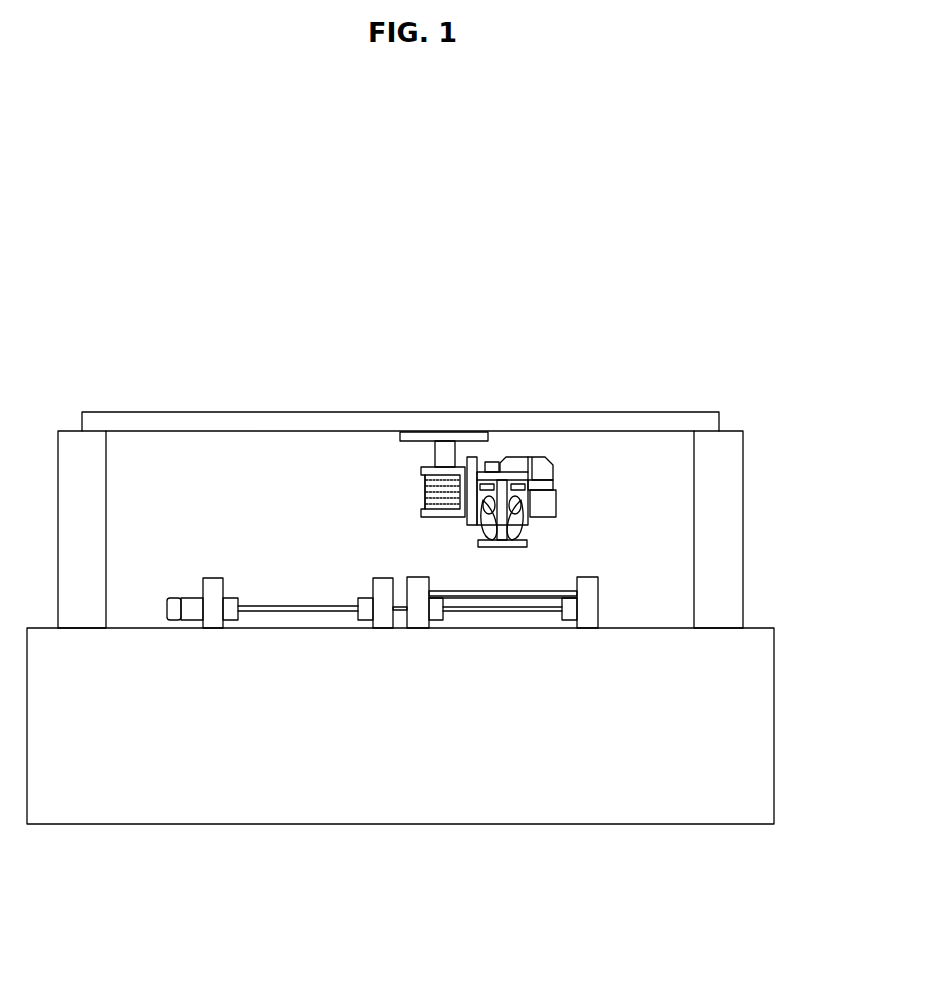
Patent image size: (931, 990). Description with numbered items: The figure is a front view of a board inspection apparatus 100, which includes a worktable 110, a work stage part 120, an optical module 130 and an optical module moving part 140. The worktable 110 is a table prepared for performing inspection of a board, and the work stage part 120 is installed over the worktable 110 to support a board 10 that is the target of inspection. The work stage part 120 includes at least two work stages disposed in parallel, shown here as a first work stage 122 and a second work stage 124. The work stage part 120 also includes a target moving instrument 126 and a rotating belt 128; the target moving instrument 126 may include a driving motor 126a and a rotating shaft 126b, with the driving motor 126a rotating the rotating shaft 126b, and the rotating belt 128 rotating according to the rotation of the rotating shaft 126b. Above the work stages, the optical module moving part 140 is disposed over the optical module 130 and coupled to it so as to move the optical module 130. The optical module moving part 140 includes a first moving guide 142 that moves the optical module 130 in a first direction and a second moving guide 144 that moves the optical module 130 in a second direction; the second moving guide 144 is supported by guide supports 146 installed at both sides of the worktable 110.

The board inspection apparatus 100 is at (451, 196).
The board 10 is at (547, 590).
The worktable 110 is at (752, 632).
The work stage part 120 is at (605, 927).
The first work stage 122 is at (329, 628).
The second work stage 124 is at (511, 635).
The target moving instrument 126 is at (175, 885).
The driving motor 126a is at (187, 617).
The rotating shaft 126b is at (255, 615).
The rotating belt 128 is at (237, 599).
The optical module 130 is at (557, 453).
The optical module moving part 140 is at (503, 297).
The first moving guide 142 is at (457, 420).
The second moving guide 144 is at (423, 420).
The guide supports 146 is at (735, 437).